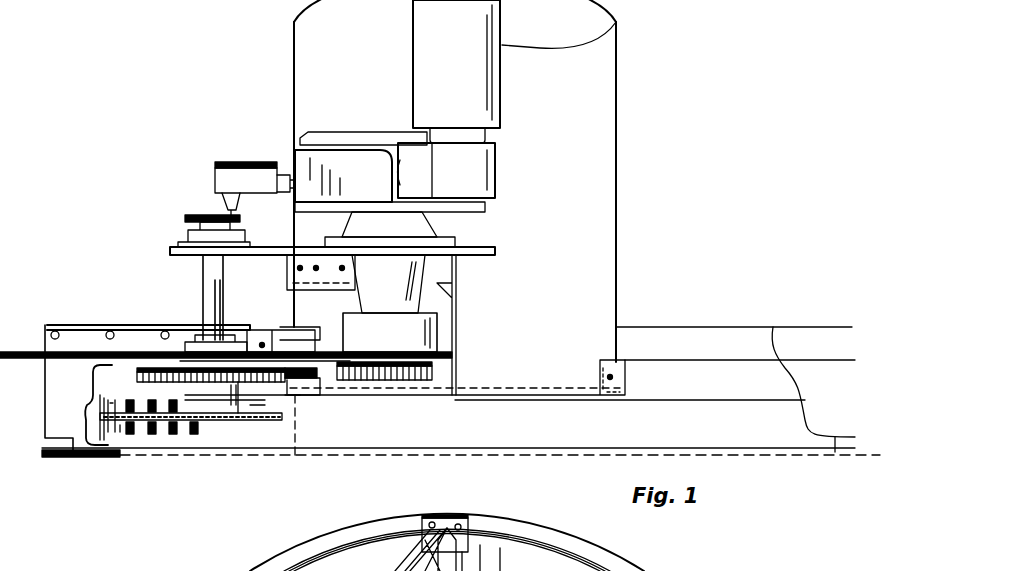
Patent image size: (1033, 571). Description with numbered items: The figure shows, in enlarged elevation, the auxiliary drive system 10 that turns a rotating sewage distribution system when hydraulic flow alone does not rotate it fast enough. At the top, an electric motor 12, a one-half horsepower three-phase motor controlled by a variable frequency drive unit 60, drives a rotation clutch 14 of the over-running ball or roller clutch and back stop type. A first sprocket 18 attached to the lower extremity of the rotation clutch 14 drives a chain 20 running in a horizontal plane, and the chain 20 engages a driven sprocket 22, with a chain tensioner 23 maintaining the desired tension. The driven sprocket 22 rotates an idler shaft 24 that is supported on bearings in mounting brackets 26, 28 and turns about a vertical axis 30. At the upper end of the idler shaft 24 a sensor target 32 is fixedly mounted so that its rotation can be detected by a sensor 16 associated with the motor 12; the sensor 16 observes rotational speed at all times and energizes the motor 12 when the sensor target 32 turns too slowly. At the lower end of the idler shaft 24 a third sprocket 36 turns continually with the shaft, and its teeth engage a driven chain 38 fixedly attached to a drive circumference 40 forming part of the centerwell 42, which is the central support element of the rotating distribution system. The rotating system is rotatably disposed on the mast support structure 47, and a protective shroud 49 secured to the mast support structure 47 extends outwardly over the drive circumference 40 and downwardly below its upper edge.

The auxiliary drive system 10 is at (505, 222).
The electric motor 12 is at (502, 77).
The rotation clutch 14 is at (437, 320).
The sensor 16 is at (216, 172).
The first sprocket 18 is at (432, 352).
The chain 20 is at (413, 385).
The driven sprocket 22 is at (160, 368).
The chain tensioner 23 is at (318, 440).
The idler shaft 24 is at (201, 305).
The mounting bracket 26 is at (180, 242).
The mounting bracket 28 is at (165, 425).
The vertical axis 30 is at (183, 538).
The sensor target 32 is at (236, 205).
The third sprocket 36 is at (258, 418).
The driven chain 38 is at (120, 425).
The drive circumference 40 is at (75, 455).
The centerwell 42 is at (687, 448).
The mast support structure 47 is at (646, 144).
The protective shroud 49 is at (62, 385).
The variable frequency drive unit 60 is at (358, 133).